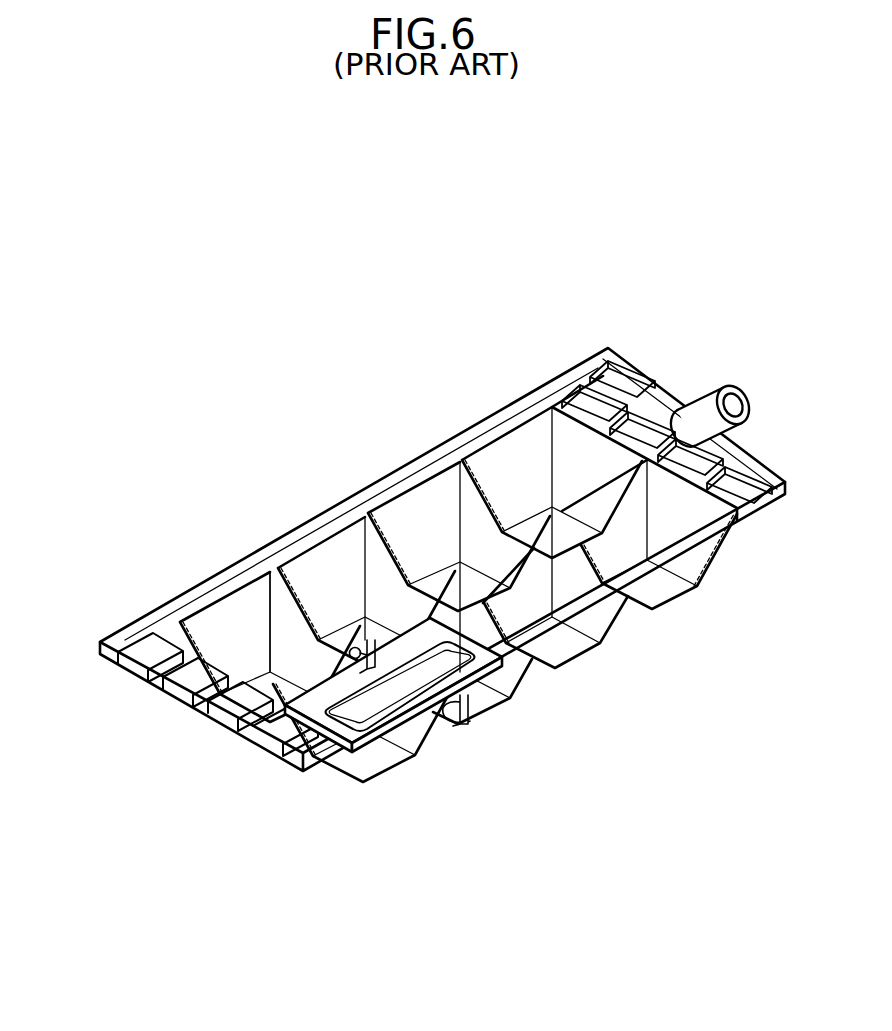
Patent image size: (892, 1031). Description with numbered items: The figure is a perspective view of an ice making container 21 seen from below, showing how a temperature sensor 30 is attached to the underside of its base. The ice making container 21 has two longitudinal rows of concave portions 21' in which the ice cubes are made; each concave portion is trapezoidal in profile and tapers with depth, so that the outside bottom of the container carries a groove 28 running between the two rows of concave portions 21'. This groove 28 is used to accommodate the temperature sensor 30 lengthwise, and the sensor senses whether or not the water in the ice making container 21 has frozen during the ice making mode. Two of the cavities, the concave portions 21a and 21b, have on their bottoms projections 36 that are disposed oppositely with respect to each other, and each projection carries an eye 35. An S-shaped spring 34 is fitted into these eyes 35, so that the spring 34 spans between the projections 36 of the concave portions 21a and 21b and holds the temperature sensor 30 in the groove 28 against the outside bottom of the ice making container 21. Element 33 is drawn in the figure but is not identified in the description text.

The ice making container 21 is at (430, 565).
The concave portion 21a is at (287, 572).
The concave portion 21b is at (483, 703).
The concave portions 21' is at (552, 431).
The groove 28 is at (522, 602).
The temperature sensor 30 is at (393, 648).
The side wall 33 is at (475, 623).
The S-shaped spring 34 is at (351, 752).
The eyes 35 is at (353, 650).
The projections 36 is at (458, 730).